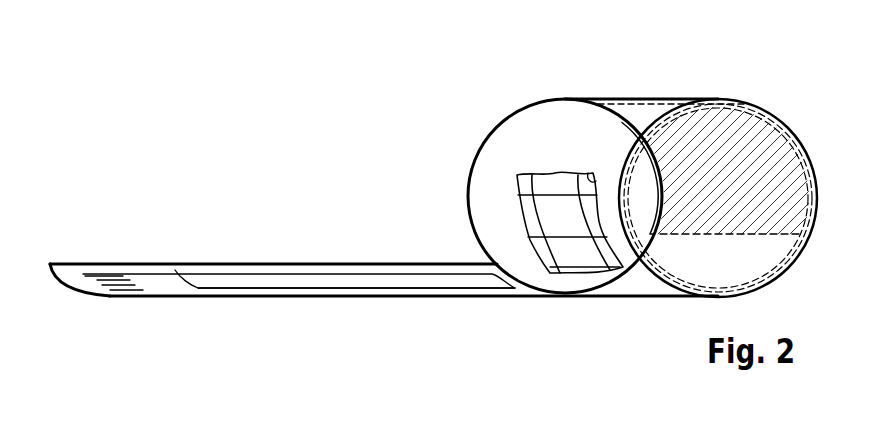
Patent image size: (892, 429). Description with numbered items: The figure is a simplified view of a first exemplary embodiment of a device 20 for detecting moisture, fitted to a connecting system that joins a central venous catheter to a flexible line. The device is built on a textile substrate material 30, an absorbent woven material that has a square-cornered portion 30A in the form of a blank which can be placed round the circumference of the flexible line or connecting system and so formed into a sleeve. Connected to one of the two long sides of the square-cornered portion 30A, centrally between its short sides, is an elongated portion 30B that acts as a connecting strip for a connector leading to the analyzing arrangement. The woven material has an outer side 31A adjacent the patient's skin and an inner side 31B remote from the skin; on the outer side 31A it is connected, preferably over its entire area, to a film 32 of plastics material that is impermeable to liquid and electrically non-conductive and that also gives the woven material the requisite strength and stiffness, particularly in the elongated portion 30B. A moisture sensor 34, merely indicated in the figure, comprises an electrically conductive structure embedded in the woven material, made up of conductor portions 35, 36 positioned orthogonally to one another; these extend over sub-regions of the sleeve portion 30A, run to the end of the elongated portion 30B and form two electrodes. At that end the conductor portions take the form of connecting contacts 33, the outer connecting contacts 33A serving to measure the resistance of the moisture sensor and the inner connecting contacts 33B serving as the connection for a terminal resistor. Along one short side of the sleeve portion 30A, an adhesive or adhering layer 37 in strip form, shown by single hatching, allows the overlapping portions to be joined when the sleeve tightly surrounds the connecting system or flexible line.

The cutting device 20 is at (484, 111).
The textile substrate material 30 is at (525, 134).
The square-cornered portion 30A is at (647, 297).
The elongated portion 30B is at (280, 283).
The outer side 31A is at (527, 297).
The inner side 31B is at (513, 231).
The film of plastics material 32 is at (562, 297).
The connecting contacts 33 is at (100, 250).
The outer connecting contacts 33A is at (90, 264).
The inner connecting contacts 33B is at (127, 268).
The moisture sensor 34 is at (510, 216).
The conductor portion 35 is at (556, 196).
The conductor portion 36 is at (590, 190).
The adhesive or adhering layer 37 is at (705, 152).